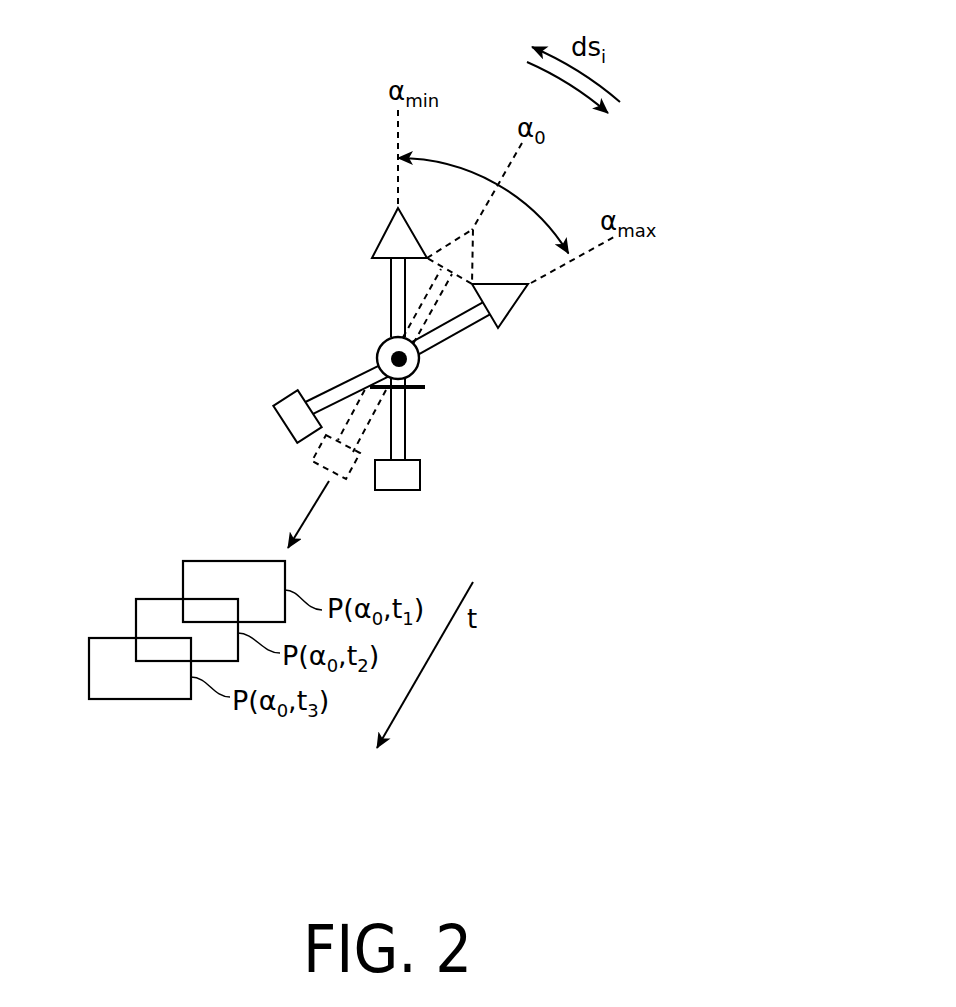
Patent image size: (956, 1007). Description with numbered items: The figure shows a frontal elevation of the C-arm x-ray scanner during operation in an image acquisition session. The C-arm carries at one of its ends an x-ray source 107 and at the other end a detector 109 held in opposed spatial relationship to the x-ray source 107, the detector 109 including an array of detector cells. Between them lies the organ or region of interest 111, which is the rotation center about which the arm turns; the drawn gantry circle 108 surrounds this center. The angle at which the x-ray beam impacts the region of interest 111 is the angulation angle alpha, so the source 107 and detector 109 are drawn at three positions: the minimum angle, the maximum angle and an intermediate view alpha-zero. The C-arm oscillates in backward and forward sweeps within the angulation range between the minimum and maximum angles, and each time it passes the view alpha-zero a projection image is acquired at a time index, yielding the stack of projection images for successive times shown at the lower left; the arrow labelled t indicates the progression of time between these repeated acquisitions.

The x-ray source 107 is at (404, 214).
The rotatable gantry 108 is at (380, 347).
The detector 109 is at (282, 398).
The organ of interest 111 is at (404, 362).